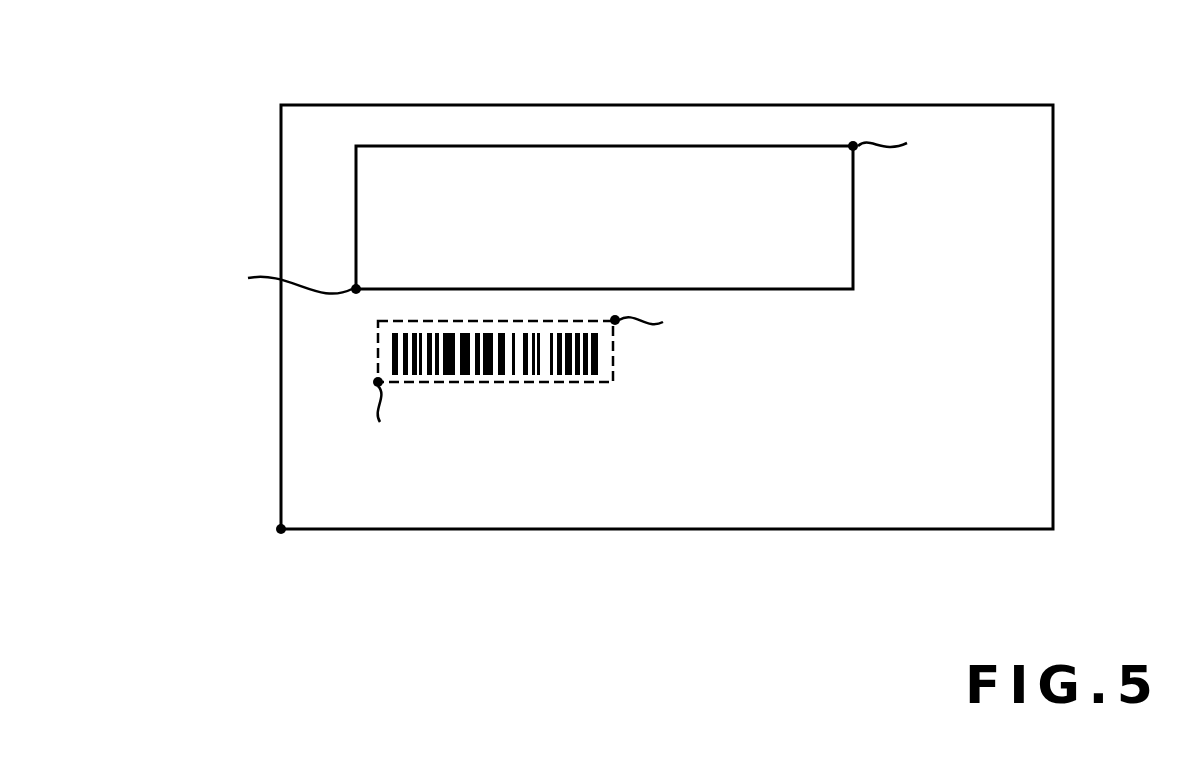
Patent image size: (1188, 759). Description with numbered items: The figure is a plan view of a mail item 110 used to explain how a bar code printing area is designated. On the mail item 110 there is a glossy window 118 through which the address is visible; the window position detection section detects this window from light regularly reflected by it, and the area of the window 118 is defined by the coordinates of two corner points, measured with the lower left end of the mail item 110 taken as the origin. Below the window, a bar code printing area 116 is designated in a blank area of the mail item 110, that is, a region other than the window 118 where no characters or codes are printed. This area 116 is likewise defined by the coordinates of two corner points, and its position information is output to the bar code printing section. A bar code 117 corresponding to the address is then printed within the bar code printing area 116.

The mail item 110 is at (697, 104).
The window 118 is at (855, 250).
The bar code printing area 116 is at (617, 350).
The bar code 117 is at (605, 363).